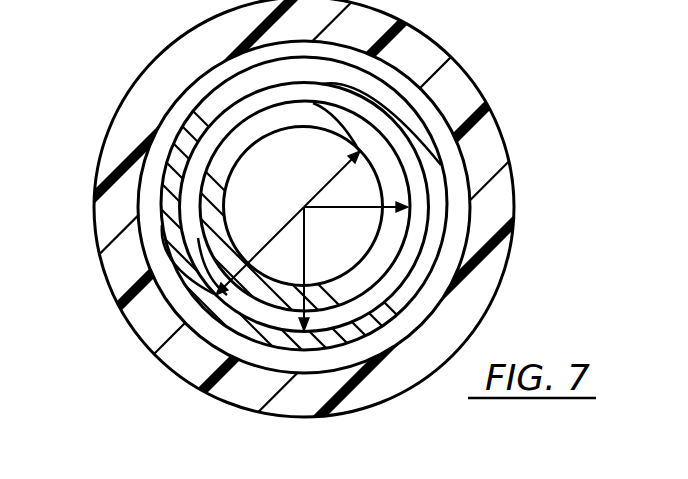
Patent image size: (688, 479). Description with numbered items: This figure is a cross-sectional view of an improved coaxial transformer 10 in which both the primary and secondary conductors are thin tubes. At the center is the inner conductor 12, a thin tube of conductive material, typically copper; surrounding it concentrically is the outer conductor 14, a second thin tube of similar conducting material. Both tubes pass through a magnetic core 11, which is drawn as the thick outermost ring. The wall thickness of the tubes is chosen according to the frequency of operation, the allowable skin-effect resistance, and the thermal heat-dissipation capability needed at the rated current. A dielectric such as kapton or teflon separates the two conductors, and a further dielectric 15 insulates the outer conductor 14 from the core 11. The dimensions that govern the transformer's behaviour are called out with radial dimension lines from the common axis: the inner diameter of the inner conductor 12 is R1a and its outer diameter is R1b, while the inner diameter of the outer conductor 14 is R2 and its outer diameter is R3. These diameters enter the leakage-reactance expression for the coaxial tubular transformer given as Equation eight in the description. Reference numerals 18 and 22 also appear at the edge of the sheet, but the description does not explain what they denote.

The coaxial transformer 10 is at (136, 62).
The magnetic core 11 is at (453, 76).
The dielectric 15 is at (487, 288).
The outer conductor 14 is at (433, 163).
The inner conductor 12 is at (388, 237).
The shaft 18 is at (73, 477).
The element 22 is at (429, 466).
The inner diameter of the inner conductor R1a is at (332, 175).
The outer diameter of the inner conductor R1b is at (318, 214).
The inner diameter of the outer conductor R2 is at (306, 258).
The outer diameter of the outer conductor R3 is at (282, 227).